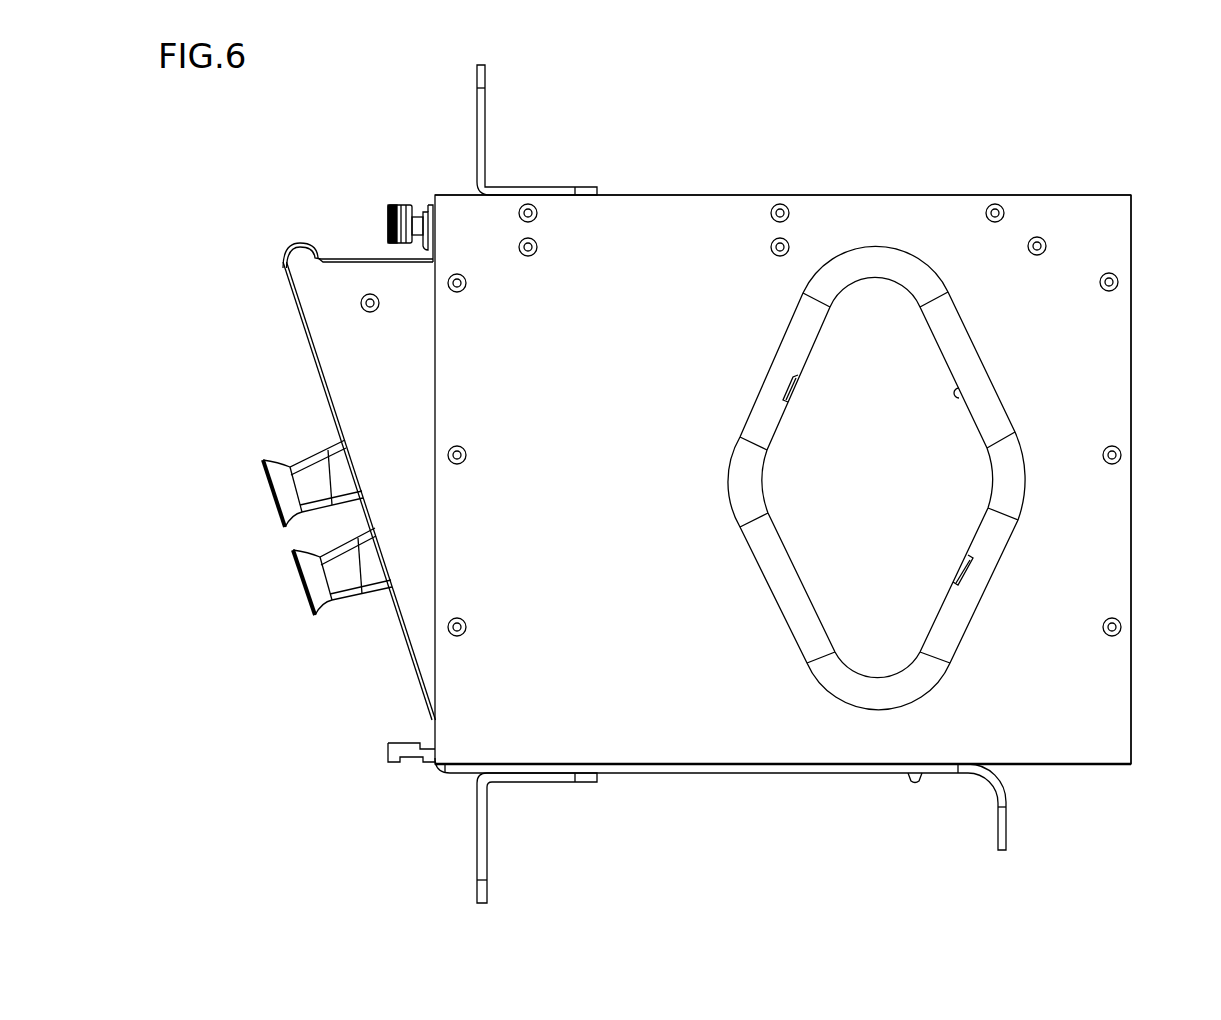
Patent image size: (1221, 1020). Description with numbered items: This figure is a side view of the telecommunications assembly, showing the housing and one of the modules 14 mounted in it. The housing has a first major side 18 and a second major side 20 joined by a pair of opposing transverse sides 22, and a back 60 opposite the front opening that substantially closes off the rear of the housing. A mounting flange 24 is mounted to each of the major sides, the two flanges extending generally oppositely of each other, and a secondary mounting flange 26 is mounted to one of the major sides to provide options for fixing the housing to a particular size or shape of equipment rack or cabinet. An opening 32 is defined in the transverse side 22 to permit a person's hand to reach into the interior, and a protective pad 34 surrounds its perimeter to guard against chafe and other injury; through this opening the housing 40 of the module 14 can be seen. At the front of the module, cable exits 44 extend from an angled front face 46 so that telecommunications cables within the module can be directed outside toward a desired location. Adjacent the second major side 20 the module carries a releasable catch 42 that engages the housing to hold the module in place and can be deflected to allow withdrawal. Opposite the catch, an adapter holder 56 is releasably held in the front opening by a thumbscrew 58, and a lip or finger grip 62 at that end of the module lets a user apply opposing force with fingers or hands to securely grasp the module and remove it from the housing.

The module 14 is at (336, 461).
The first major side 18 is at (862, 193).
The second major side 20 is at (1062, 765).
The transverse side 22 is at (567, 630).
The mounting flange 24 is at (478, 95).
The secondary mounting flange 26 is at (1006, 825).
The opening 32 is at (955, 488).
The protective pad 34 is at (1000, 536).
The housing of module 40 is at (902, 478).
The releasable catch 42 is at (388, 752).
The cable exit 44 is at (300, 565).
The front face 46 is at (310, 352).
The adapter holder 56 is at (428, 205).
The thumbscrew 58 is at (388, 208).
The back 60 is at (1131, 370).
The finger grip 62 is at (290, 246).